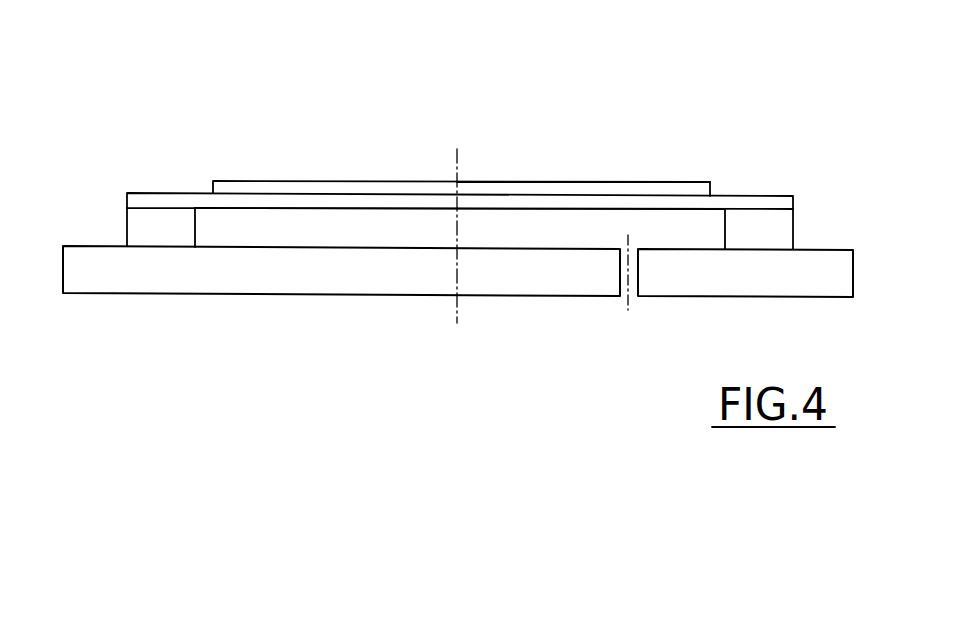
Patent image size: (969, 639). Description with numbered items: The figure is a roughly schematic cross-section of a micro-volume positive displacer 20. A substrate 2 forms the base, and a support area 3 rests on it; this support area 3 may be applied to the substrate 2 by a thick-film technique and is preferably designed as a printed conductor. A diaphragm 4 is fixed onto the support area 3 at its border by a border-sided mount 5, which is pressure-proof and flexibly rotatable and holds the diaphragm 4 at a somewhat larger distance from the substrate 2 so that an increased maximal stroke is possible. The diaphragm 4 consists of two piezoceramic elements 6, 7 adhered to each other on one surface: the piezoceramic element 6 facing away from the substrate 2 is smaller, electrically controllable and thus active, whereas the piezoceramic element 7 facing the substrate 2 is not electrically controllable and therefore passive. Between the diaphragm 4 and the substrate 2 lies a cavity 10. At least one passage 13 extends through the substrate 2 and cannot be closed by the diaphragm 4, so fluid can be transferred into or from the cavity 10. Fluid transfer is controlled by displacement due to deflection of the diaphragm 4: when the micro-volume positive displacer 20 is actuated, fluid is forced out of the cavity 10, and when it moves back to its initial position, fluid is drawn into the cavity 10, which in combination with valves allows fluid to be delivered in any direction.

The substrate 2 is at (167, 278).
The support area 3 is at (150, 223).
The diaphragm 4 is at (328, 183).
The border-sided mount 5 is at (151, 203).
The piezoceramic element 6 is at (603, 192).
The piezoceramic element 7 is at (732, 202).
The cavity 10 is at (255, 228).
The passage 13 is at (627, 305).
The micro-volume positive displacer 20 is at (491, 143).